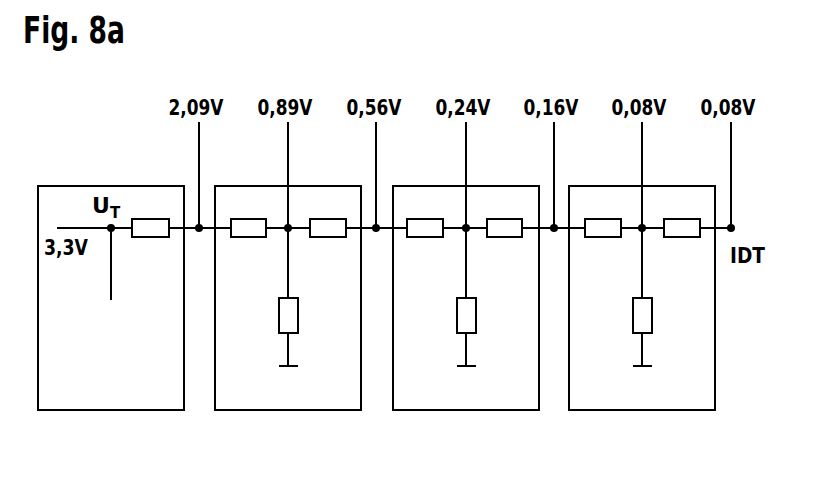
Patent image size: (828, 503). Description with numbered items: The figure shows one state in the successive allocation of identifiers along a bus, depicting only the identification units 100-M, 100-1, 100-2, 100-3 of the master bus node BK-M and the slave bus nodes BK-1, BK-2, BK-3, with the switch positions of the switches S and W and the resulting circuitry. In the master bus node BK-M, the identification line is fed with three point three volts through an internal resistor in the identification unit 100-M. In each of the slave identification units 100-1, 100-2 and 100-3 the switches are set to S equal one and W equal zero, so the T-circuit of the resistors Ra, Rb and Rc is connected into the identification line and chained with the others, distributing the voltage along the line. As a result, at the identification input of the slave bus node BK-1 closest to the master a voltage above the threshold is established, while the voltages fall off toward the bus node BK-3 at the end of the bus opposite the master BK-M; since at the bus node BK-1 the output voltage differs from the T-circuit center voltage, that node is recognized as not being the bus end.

The identification unit 100-M is at (111, 298).
The identification unit 100-1 is at (288, 298).
The identification unit 100-2 is at (466, 298).
The identification unit 100-3 is at (642, 298).
The master bus node BK-M is at (111, 336).
The bus node BK-1 is at (288, 336).
The bus node BK-2 is at (466, 336).
The bus node BK-3 is at (642, 336).